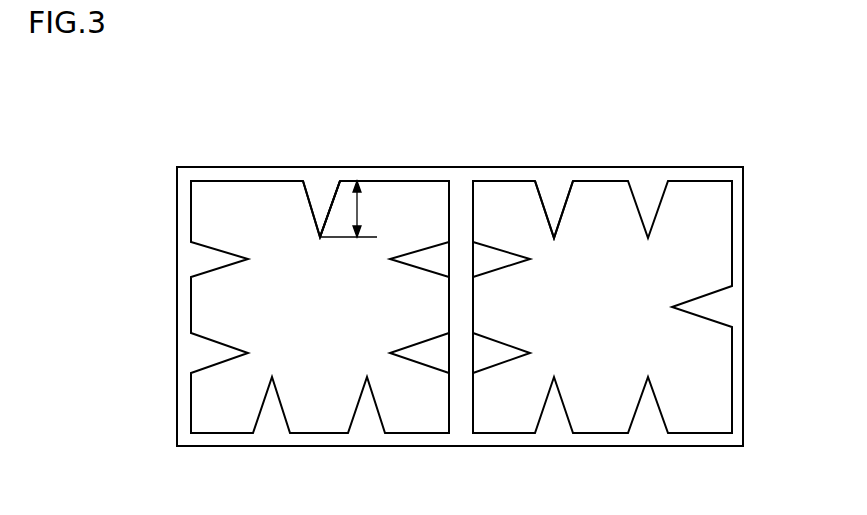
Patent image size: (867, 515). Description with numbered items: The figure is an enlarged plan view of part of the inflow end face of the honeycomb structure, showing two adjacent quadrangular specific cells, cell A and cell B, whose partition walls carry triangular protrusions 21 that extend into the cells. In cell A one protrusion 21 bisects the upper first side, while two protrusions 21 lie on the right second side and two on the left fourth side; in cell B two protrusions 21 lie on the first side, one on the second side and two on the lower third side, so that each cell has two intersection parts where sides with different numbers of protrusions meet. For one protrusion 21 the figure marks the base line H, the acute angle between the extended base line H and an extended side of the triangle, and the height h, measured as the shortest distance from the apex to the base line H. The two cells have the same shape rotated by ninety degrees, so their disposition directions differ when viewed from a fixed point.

The protrusion 21 is at (557, 201).
The base line H is at (301, 198).
The height h is at (349, 209).